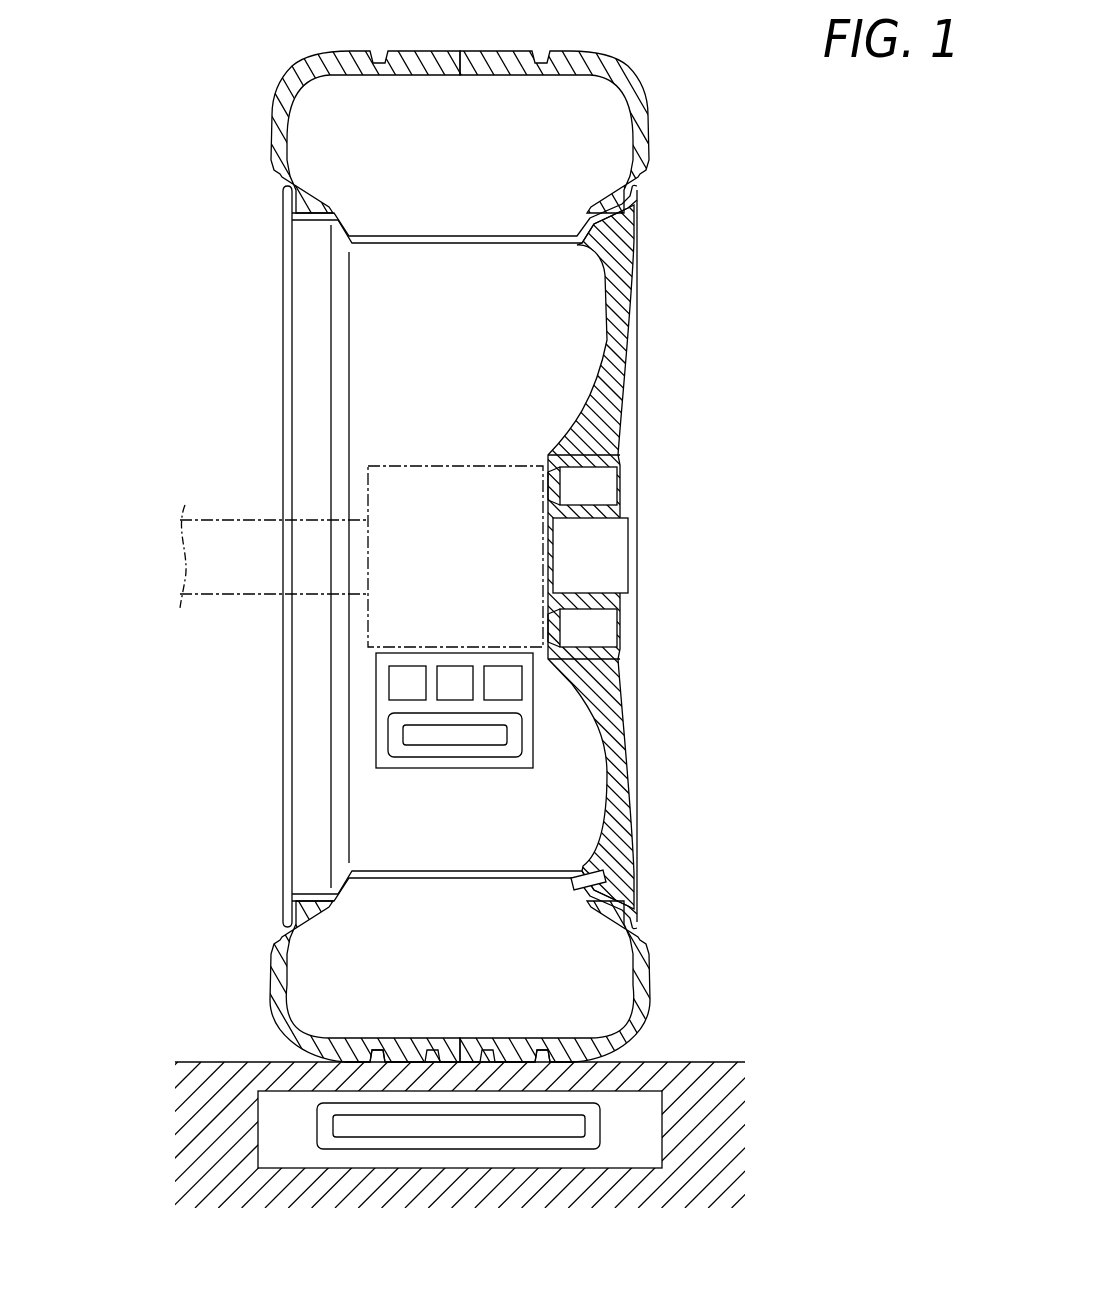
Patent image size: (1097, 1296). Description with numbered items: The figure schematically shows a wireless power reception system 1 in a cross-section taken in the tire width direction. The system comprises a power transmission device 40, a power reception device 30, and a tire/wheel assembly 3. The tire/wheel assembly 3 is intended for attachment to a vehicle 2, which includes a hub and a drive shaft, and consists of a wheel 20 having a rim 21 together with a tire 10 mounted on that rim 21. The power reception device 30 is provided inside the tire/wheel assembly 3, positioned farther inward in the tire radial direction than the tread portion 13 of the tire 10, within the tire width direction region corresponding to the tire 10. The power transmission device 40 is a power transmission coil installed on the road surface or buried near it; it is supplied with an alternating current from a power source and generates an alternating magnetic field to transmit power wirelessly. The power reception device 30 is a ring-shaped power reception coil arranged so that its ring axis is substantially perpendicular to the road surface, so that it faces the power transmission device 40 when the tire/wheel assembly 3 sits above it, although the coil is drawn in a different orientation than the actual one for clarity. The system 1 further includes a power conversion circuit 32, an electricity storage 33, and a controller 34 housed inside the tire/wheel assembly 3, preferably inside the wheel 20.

The wireless power reception system 1 is at (172, 70).
The tire 10 is at (656, 143).
The tread portion 13 is at (566, 1063).
The wheel 20 is at (652, 370).
The rim 21 is at (431, 869).
The tire/wheel assembly 3 is at (716, 452).
The vehicle 2 is at (458, 484).
The power reception device 30 is at (466, 752).
The power conversion circuit 32 is at (407, 688).
The electricity storage 33 is at (452, 688).
The controller 34 is at (503, 688).
The power transmission device 40 is at (360, 1149).